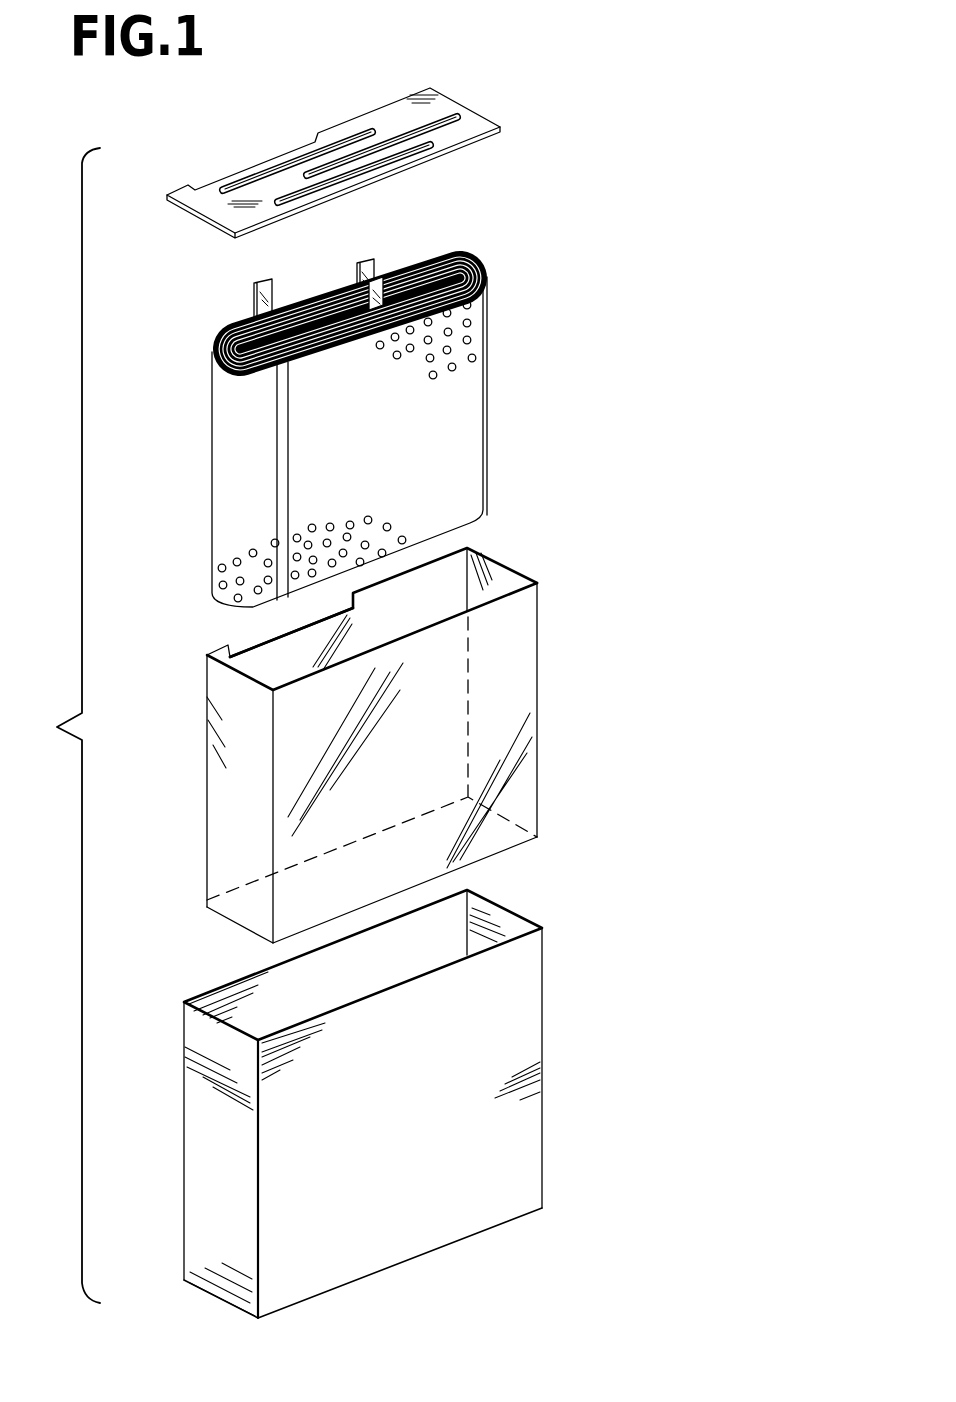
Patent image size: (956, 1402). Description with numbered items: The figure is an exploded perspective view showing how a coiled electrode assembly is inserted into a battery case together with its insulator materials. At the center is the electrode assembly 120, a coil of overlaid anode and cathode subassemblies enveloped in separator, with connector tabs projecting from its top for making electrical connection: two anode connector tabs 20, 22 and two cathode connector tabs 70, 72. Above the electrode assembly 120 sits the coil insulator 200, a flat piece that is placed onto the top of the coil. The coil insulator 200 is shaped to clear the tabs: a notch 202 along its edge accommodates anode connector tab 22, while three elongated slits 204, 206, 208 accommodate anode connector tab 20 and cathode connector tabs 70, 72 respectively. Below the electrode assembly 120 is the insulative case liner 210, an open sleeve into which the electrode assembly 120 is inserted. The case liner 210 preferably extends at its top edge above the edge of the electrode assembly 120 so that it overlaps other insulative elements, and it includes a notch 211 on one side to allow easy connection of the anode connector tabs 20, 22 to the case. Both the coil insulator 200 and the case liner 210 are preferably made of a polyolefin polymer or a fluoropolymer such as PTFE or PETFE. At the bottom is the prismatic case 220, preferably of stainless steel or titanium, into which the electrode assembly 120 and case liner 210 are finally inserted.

The anode connector tab 20 is at (373, 262).
The anode connector tab 22 is at (258, 281).
The cathode connector tab 70 is at (430, 250).
The cathode connector tab 72 is at (312, 297).
The electrode assembly 120 is at (391, 402).
The coil insulator 200 is at (386, 120).
The notch 202 is at (253, 168).
The slit 204 is at (333, 142).
The slit 206 is at (423, 127).
The slit 208 is at (403, 160).
The case liner 210 is at (425, 745).
The notch 211 is at (267, 640).
The case 220 is at (552, 1054).